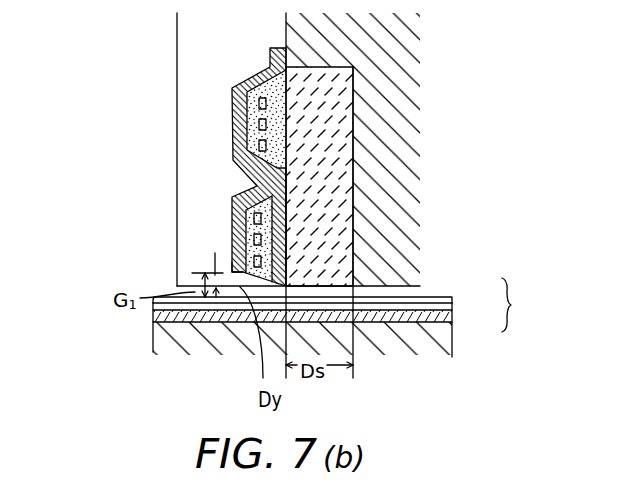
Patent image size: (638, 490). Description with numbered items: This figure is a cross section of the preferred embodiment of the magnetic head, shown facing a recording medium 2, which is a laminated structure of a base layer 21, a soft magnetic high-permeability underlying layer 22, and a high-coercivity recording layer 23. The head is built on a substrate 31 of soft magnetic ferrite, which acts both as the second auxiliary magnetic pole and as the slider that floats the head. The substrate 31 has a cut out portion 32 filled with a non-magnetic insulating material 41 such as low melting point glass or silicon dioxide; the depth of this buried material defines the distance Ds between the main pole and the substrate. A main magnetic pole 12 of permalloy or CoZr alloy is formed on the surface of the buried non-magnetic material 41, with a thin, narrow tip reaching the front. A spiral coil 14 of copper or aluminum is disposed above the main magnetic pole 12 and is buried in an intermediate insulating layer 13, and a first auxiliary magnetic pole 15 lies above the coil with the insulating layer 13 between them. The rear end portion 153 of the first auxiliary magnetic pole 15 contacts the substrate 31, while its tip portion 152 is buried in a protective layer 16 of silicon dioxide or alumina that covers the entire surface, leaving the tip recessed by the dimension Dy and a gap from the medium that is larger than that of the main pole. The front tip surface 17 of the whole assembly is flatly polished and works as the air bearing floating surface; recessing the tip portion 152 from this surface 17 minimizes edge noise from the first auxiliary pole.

The protective layer 16 is at (178, 47).
The rear end portion of the first auxiliary magnetic pole 153 is at (274, 48).
The first auxiliary magnetic pole 15 is at (233, 125).
The intermediate insulating layer 13 is at (253, 133).
The main magnetic pole 12 is at (252, 188).
The spiral coil 14 is at (253, 237).
The tip portion of the first auxiliary magnetic pole 152 is at (230, 270).
The front tip surface 17 is at (192, 290).
The substrate 31 is at (413, 43).
The non-magnetic insulating material 41 is at (343, 136).
The cut out portion 32 is at (354, 193).
The recording layer 23 is at (453, 296).
The underlying layer 22 is at (453, 310).
The base layer 21 is at (442, 335).
The recording medium 2 is at (515, 305).